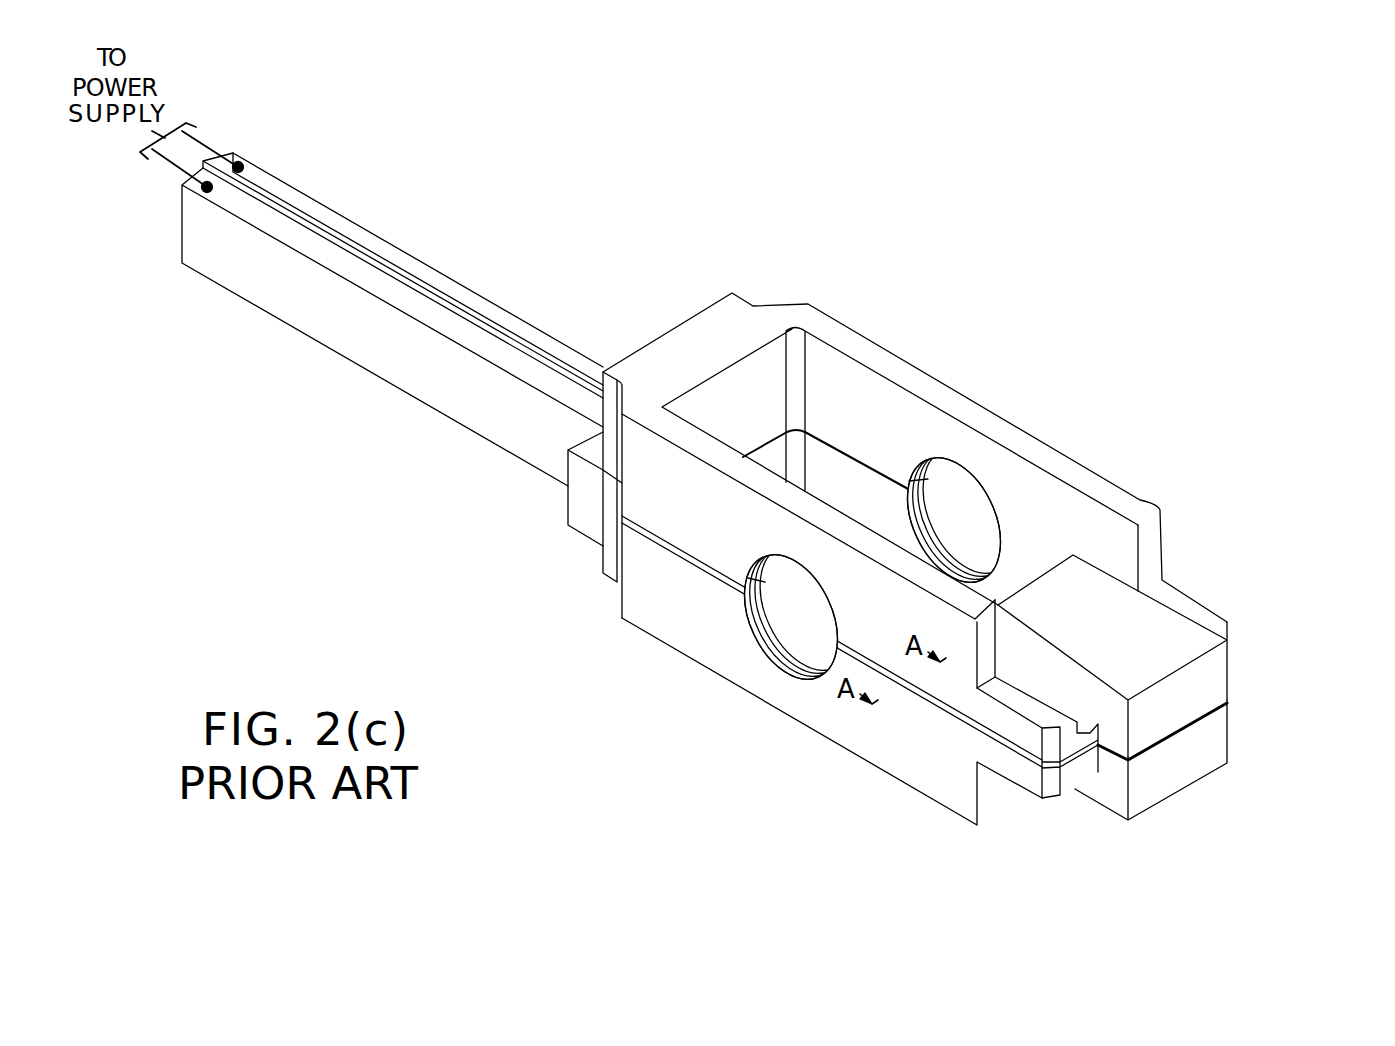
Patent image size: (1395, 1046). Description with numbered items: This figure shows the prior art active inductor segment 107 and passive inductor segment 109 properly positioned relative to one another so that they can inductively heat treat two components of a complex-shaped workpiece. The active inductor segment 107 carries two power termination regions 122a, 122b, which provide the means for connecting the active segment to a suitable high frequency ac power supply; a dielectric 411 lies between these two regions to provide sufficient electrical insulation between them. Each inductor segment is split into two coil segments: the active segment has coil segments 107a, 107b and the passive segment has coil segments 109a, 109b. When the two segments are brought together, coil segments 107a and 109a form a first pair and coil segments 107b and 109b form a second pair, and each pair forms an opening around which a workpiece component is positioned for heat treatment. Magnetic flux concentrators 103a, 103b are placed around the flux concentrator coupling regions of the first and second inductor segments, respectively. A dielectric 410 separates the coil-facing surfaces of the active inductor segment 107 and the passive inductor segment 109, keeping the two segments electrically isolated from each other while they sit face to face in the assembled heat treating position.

The dielectric 411 is at (333, 238).
The power termination region 122a is at (410, 263).
The power termination region 122b is at (312, 302).
The passive inductor segment 109 is at (877, 303).
The coil segment 109a is at (793, 572).
The coil segment 109b is at (953, 482).
The active inductor segment 107 is at (608, 638).
The coil segment 107a is at (806, 632).
The coil segment 107b is at (968, 522).
The magnetic flux concentrator 103a is at (1188, 763).
The magnetic flux concentrator 103b is at (1165, 637).
The dielectric 410 is at (978, 742).